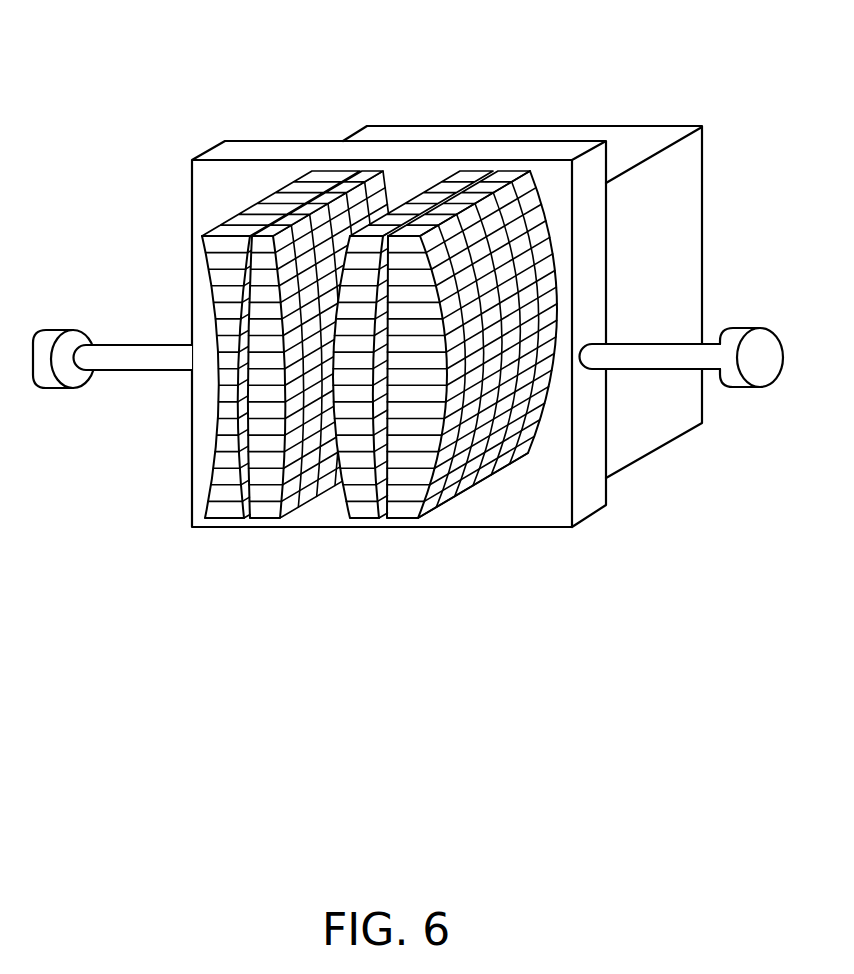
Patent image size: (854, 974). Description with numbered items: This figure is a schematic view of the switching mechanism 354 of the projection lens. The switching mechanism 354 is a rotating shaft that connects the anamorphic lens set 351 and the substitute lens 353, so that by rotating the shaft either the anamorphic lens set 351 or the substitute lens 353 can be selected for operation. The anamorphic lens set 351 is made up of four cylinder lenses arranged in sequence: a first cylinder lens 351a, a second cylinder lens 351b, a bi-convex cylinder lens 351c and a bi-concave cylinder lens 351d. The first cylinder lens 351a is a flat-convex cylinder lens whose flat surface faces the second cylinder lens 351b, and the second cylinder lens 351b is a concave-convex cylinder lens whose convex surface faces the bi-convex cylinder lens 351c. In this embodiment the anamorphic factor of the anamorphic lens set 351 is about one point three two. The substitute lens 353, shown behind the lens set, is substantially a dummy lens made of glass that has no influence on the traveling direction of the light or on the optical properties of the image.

The anamorphic lens set 351 is at (379, 463).
The first cylinder lens 351a is at (410, 483).
The second cylinder lens 351b is at (362, 472).
The bi-convex cylinder lens 351c is at (270, 488).
The bi-concave cylinder lens 351d is at (228, 482).
The substitute lens 353 is at (627, 138).
The switching mechanism 354 is at (765, 358).